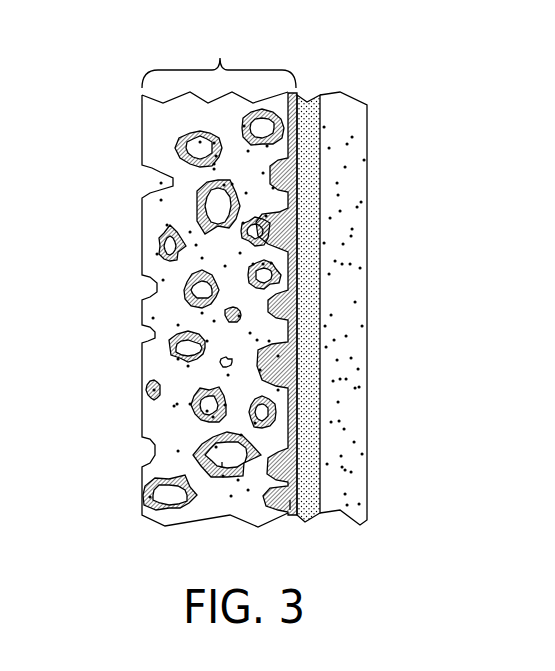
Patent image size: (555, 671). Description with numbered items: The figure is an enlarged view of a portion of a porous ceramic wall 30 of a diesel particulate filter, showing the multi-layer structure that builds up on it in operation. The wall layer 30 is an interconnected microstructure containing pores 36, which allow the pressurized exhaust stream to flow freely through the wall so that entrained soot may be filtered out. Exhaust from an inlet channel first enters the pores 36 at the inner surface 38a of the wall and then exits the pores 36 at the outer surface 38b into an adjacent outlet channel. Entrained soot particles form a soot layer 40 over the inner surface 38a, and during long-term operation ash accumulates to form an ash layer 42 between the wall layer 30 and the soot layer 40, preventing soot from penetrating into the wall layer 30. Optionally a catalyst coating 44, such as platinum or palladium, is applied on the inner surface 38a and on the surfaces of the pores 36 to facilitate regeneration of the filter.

The porous ceramic wall 30 is at (250, 298).
The pores 36 is at (165, 346).
The inner surface 38a is at (293, 278).
The outer surface 38b is at (140, 217).
The soot layer 40 is at (357, 497).
The ash layer 42 is at (310, 523).
The catalyst coating 44 is at (222, 468).